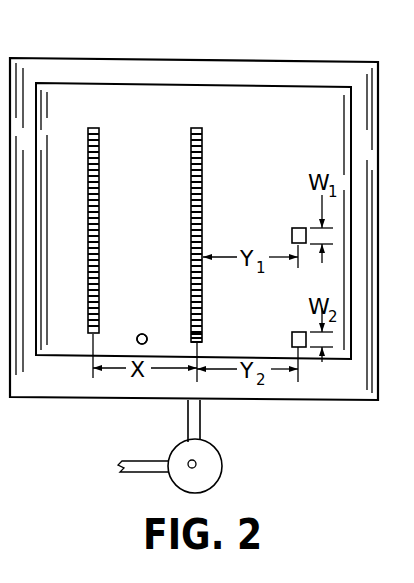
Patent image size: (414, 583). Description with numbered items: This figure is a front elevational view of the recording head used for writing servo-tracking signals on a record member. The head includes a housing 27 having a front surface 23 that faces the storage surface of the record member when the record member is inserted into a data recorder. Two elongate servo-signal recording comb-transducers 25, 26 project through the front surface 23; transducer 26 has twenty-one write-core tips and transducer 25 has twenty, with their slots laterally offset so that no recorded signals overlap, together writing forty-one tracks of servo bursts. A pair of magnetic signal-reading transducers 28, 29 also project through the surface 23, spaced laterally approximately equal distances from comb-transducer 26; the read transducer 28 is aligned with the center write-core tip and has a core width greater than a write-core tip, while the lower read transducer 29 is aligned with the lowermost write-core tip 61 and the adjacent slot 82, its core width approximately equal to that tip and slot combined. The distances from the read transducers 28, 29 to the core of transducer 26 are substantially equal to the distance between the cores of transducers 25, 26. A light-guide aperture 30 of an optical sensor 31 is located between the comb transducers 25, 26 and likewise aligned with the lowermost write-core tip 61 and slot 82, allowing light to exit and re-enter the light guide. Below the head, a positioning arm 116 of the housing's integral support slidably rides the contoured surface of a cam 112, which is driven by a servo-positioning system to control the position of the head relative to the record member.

The housing 27 is at (82, 54).
The front surface 23 is at (285, 140).
The servo-signal recording comb-transducer 25 is at (102, 160).
The servo-signal recording comb-transducer 26 is at (186, 196).
The magnetic signal-reading transducer 28 is at (290, 223).
The magnetic signal-reading transducer 29 is at (298, 326).
The light-guide aperture 30 is at (147, 337).
The optical sensor 31 is at (132, 332).
The slot 82 is at (203, 338).
The bottom write-core tip 61 is at (203, 343).
The positioning arm 116 is at (199, 416).
The cam 112 is at (208, 478).